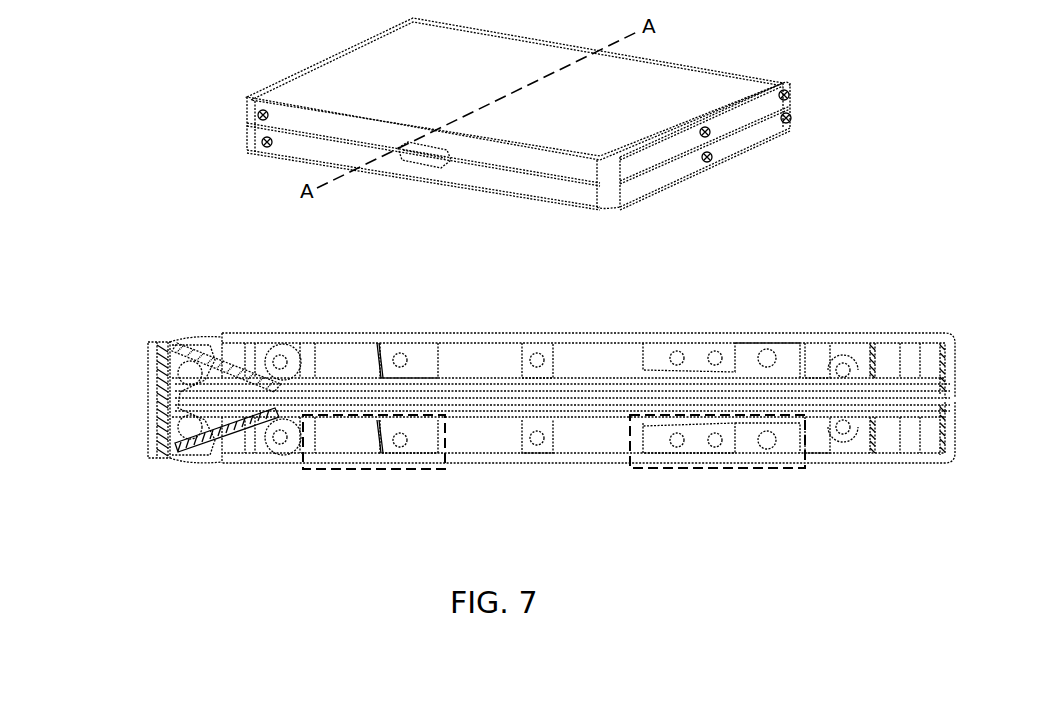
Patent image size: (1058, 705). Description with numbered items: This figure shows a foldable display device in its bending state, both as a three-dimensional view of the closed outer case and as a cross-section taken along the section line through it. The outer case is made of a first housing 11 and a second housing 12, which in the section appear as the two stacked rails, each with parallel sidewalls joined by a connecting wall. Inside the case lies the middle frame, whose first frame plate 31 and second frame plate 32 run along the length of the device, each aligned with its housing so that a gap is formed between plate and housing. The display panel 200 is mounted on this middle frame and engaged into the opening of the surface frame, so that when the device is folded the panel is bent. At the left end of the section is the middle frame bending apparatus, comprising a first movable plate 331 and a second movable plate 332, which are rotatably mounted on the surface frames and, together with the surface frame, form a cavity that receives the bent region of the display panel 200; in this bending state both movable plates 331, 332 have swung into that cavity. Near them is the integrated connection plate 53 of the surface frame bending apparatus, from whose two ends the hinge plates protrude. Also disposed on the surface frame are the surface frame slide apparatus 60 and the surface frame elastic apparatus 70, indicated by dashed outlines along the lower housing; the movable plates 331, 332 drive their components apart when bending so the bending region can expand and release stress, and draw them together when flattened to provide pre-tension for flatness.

The first housing 11 is at (947, 360).
The second housing 12 is at (947, 440).
The first frame plate 31 is at (478, 380).
The second frame plate 32 is at (478, 416).
The connection plate 53 is at (155, 400).
The surface frame slide apparatus 60 is at (372, 470).
The surface frame elastic apparatus 70 is at (718, 470).
The display panel 200 is at (187, 415).
The first movable plate 331 is at (197, 355).
The second movable plate 332 is at (210, 447).